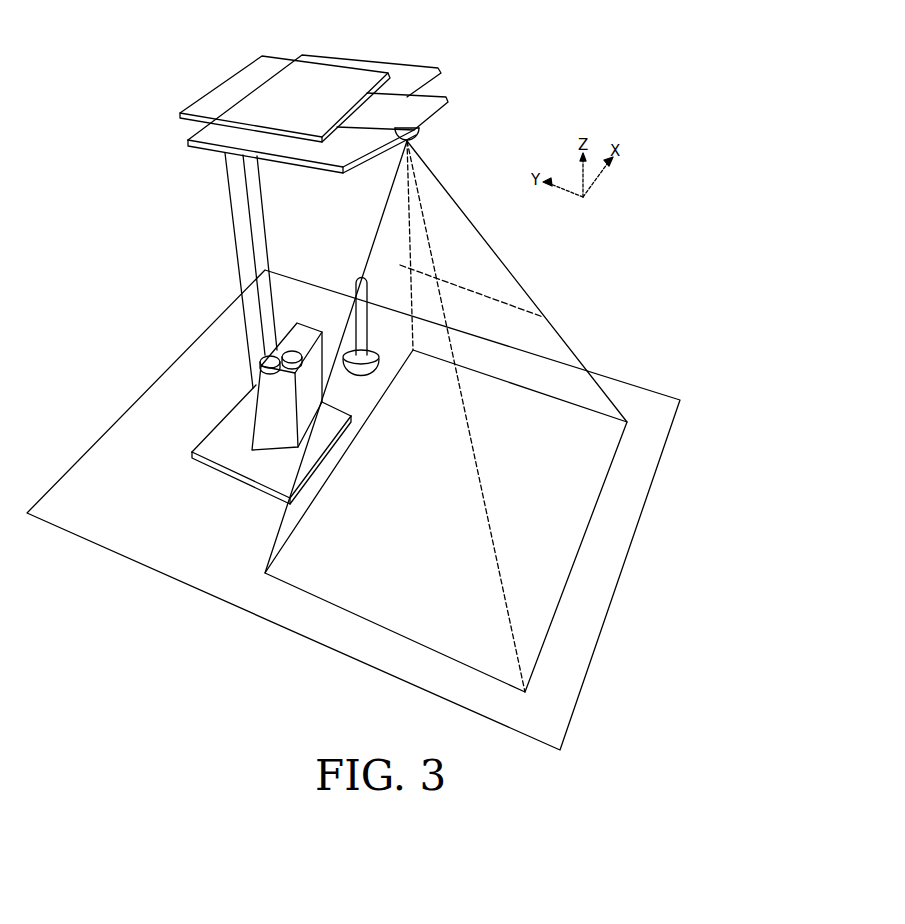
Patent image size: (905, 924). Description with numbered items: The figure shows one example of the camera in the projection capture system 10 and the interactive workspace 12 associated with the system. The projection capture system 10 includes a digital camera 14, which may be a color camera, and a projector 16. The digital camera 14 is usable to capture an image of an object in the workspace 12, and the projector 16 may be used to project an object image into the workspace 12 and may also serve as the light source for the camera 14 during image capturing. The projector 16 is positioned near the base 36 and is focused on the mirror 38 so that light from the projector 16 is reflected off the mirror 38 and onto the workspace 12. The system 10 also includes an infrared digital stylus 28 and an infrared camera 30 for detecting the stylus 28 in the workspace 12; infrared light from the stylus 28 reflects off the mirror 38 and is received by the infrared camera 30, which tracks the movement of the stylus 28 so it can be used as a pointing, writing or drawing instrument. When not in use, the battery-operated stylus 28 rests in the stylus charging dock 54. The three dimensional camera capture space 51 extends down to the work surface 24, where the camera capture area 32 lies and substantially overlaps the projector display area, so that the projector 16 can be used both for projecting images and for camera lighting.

The projection capture system 10 is at (467, 108).
The interactive workspace 12 is at (270, 532).
The digital camera 14 is at (418, 136).
The projector 16 is at (287, 437).
The work surface 24 is at (444, 498).
The infrared digital stylus 28 is at (366, 293).
The infrared camera 30 is at (262, 401).
The camera capture area 32 is at (543, 647).
The base 36 is at (238, 457).
The mirror 38 is at (325, 172).
The camera capture space 51 is at (556, 346).
The stylus charging dock 54 is at (379, 362).